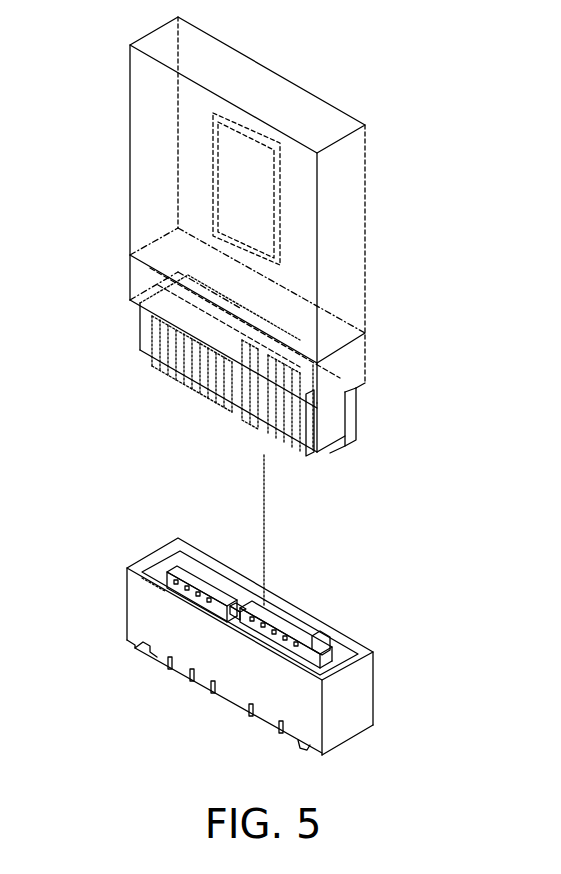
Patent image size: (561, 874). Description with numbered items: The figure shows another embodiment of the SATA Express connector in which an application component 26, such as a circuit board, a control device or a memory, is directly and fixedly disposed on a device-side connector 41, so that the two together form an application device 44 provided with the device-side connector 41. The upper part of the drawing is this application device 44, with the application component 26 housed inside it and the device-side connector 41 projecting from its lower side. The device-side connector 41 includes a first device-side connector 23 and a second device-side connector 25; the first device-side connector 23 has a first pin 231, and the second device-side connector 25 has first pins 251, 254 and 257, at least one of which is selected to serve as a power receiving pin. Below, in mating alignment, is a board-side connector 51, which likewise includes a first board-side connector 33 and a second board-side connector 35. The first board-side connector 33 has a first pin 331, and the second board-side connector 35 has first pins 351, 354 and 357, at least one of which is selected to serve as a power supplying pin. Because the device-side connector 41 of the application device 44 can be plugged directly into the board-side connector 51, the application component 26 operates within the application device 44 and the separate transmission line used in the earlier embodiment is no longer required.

The first device-side connector 23 is at (145, 292).
The first pin 231 is at (162, 340).
The second device-side connector 25 is at (358, 408).
The first pin 251 is at (240, 408).
The first pin 254 is at (277, 425).
The first pin 257 is at (312, 455).
The application component 26 is at (254, 138).
The first board-side connector 33 is at (207, 572).
The first pin 331 is at (150, 585).
The second board-side connector 35 is at (302, 625).
The first pin 351 is at (245, 640).
The first pin 354 is at (278, 653).
The first pin 357 is at (305, 678).
The device-side connector 41 is at (356, 354).
The application device 44 is at (352, 221).
The board-side connector 51 is at (360, 698).